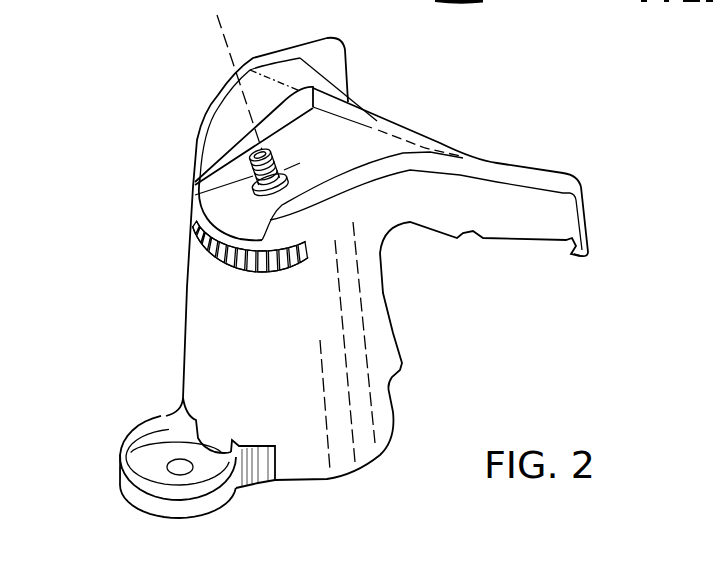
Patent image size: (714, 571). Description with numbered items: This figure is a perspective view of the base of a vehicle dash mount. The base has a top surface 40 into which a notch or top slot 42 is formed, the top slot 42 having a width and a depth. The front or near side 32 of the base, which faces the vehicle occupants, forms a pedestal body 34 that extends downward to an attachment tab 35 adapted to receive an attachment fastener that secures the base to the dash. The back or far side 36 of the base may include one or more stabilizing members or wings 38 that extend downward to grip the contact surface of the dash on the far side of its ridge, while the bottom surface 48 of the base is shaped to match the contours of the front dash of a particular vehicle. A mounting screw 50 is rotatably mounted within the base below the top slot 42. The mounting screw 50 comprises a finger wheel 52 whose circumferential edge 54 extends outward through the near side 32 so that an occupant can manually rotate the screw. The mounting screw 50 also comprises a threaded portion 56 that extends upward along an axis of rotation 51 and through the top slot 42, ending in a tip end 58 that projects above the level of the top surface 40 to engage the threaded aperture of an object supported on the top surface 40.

The front or near side 32 is at (165, 366).
The pedestal body 34 is at (213, 310).
The attachment tab 35 is at (118, 477).
The back or far side 36 is at (492, 102).
The stabilizing members or wings 38 is at (347, 52).
The top surface 40 is at (290, 183).
The top slot 42 is at (350, 163).
The bottom surface 48 is at (420, 332).
The mounting screw 50 is at (247, 198).
The axis of rotation 51 is at (218, 32).
The finger wheel 52 is at (215, 251).
The circumferential edge 54 is at (260, 272).
The threaded portion 56 is at (255, 157).
The tip end 58 is at (263, 130).